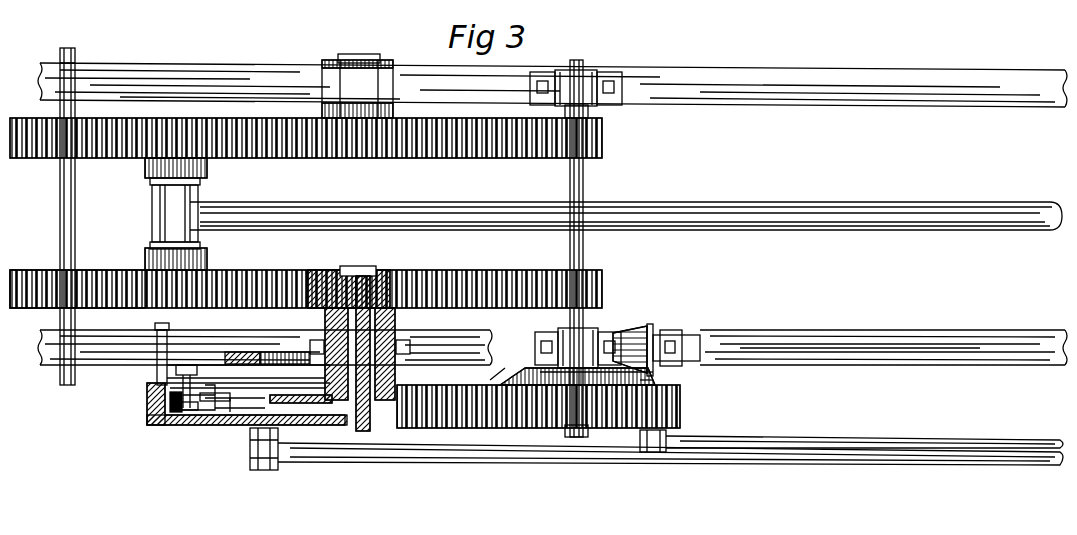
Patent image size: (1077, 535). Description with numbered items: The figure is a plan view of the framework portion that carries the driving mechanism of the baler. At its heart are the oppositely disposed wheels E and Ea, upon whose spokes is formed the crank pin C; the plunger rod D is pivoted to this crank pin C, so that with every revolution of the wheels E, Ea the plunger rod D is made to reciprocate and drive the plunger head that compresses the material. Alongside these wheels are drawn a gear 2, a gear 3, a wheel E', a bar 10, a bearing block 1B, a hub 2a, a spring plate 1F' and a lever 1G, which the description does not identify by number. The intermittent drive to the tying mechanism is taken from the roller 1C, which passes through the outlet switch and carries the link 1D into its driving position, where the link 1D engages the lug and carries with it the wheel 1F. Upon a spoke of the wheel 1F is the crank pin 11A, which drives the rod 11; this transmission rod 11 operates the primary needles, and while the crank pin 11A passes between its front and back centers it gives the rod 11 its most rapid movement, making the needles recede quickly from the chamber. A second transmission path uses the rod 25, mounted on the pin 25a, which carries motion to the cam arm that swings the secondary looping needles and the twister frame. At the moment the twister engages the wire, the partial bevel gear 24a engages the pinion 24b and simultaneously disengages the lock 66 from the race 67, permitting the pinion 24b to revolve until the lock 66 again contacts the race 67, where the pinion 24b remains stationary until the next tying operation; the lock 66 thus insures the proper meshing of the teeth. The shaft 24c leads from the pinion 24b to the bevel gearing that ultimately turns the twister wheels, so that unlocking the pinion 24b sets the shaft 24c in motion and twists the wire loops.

The pinion 2 is at (352, 62).
The gear 3 is at (322, 63).
The wheel E is at (306, 151).
The gear E' is at (77, 279).
The wheel Ea is at (484, 258).
The crank pin C is at (152, 200).
The plunger rod D is at (715, 232).
The bar 10 is at (165, 350).
The bearing block 1B is at (322, 335).
The roller 1C is at (176, 371).
The link 1D is at (180, 382).
The wheel 1F is at (247, 416).
The spring plate 1F' is at (217, 401).
The lever 1G is at (217, 398).
The hub 2a is at (392, 336).
The rod 11 is at (420, 457).
The crank pin 11A is at (255, 472).
The partial bevel gear 24a is at (536, 390).
The pinion 24b is at (648, 330).
The shaft 24c is at (768, 330).
The rod 25 is at (700, 437).
The pin 25a is at (652, 453).
The lock 66 is at (655, 373).
The race 67 is at (655, 381).